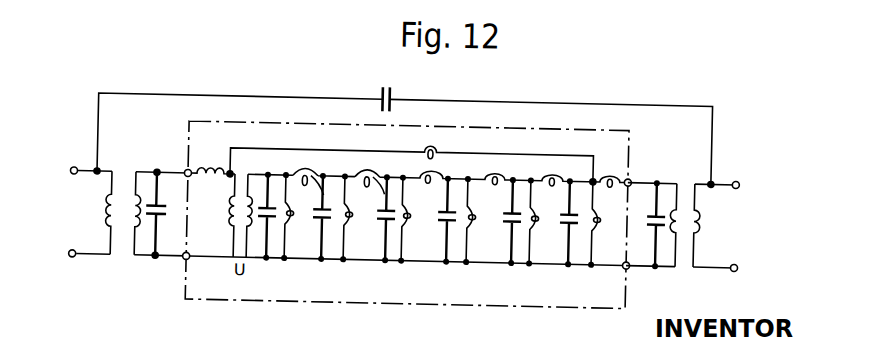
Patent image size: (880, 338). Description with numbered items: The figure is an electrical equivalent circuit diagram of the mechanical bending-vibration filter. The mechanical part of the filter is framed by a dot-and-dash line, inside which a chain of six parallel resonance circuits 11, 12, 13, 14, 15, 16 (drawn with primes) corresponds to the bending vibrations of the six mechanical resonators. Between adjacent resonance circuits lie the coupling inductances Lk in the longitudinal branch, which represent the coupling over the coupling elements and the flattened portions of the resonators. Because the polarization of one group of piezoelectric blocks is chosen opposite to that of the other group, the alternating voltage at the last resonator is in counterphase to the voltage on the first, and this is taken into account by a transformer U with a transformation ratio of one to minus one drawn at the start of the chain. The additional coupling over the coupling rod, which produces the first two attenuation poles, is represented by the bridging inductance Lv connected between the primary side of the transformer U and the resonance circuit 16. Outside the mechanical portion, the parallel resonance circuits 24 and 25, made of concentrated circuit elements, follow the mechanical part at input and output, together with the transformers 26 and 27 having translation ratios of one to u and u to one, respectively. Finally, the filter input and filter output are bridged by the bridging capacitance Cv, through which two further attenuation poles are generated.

The parallel resonance circuit 11 is at (277, 226).
The parallel resonance circuit 12 is at (336, 226).
The parallel resonance circuit 13 is at (394, 228).
The parallel resonance circuit 14 is at (458, 230).
The parallel resonance circuit 15 is at (520, 232).
The parallel resonance circuit 16 is at (578, 232).
The parallel resonance circuit 24 is at (153, 147).
The parallel resonance circuit 25 is at (667, 192).
The transformer 26 is at (125, 243).
The transformer 27 is at (685, 237).
The bridging capacitance Cv is at (399, 91).
The bridging inductance Lv is at (412, 151).
The coupling inductance Lk is at (341, 194).